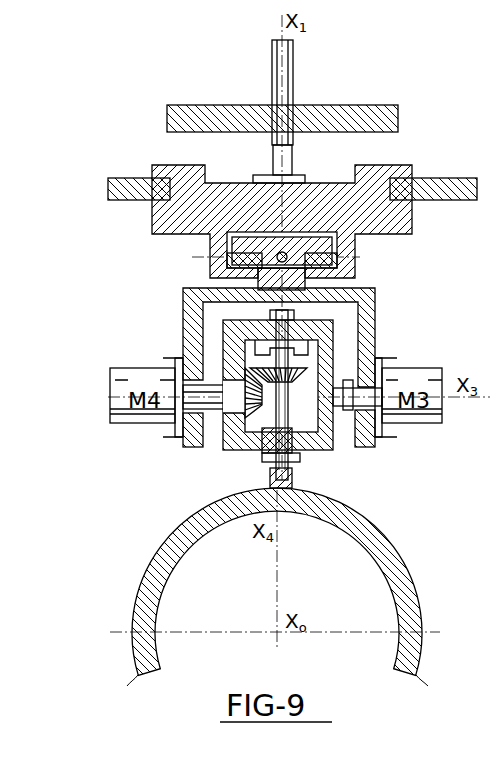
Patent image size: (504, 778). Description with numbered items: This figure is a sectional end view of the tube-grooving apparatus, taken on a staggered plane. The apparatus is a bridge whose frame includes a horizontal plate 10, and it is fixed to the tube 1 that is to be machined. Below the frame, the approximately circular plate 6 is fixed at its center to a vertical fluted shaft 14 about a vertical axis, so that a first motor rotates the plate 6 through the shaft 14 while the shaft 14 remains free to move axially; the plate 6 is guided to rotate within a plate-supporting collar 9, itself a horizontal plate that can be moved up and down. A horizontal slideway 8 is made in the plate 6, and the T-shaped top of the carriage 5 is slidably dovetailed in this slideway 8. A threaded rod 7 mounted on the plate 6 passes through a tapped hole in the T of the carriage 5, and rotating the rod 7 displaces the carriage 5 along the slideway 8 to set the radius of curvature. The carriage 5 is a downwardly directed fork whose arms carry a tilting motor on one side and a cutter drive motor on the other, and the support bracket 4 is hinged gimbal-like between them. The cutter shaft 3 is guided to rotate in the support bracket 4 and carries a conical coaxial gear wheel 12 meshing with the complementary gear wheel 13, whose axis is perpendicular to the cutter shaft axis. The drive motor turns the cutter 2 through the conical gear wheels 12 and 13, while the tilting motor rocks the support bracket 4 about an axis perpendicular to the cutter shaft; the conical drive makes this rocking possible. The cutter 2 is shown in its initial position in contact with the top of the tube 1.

The tube to be machined 1 is at (378, 540).
The cutter 2 is at (290, 478).
The cutter shaft 3 is at (250, 432).
The support bracket 4 is at (332, 450).
The carriage 5 is at (372, 325).
The plate 6 is at (372, 233).
The threaded rod 7 is at (228, 260).
The slideway 8 is at (337, 260).
The plate-supporting collar 9 is at (427, 200).
The horizontal plate 10 is at (217, 114).
The conical coaxial gear wheel 12 is at (310, 375).
The complementary gear wheel 13 is at (228, 437).
The shaft 14 is at (292, 82).